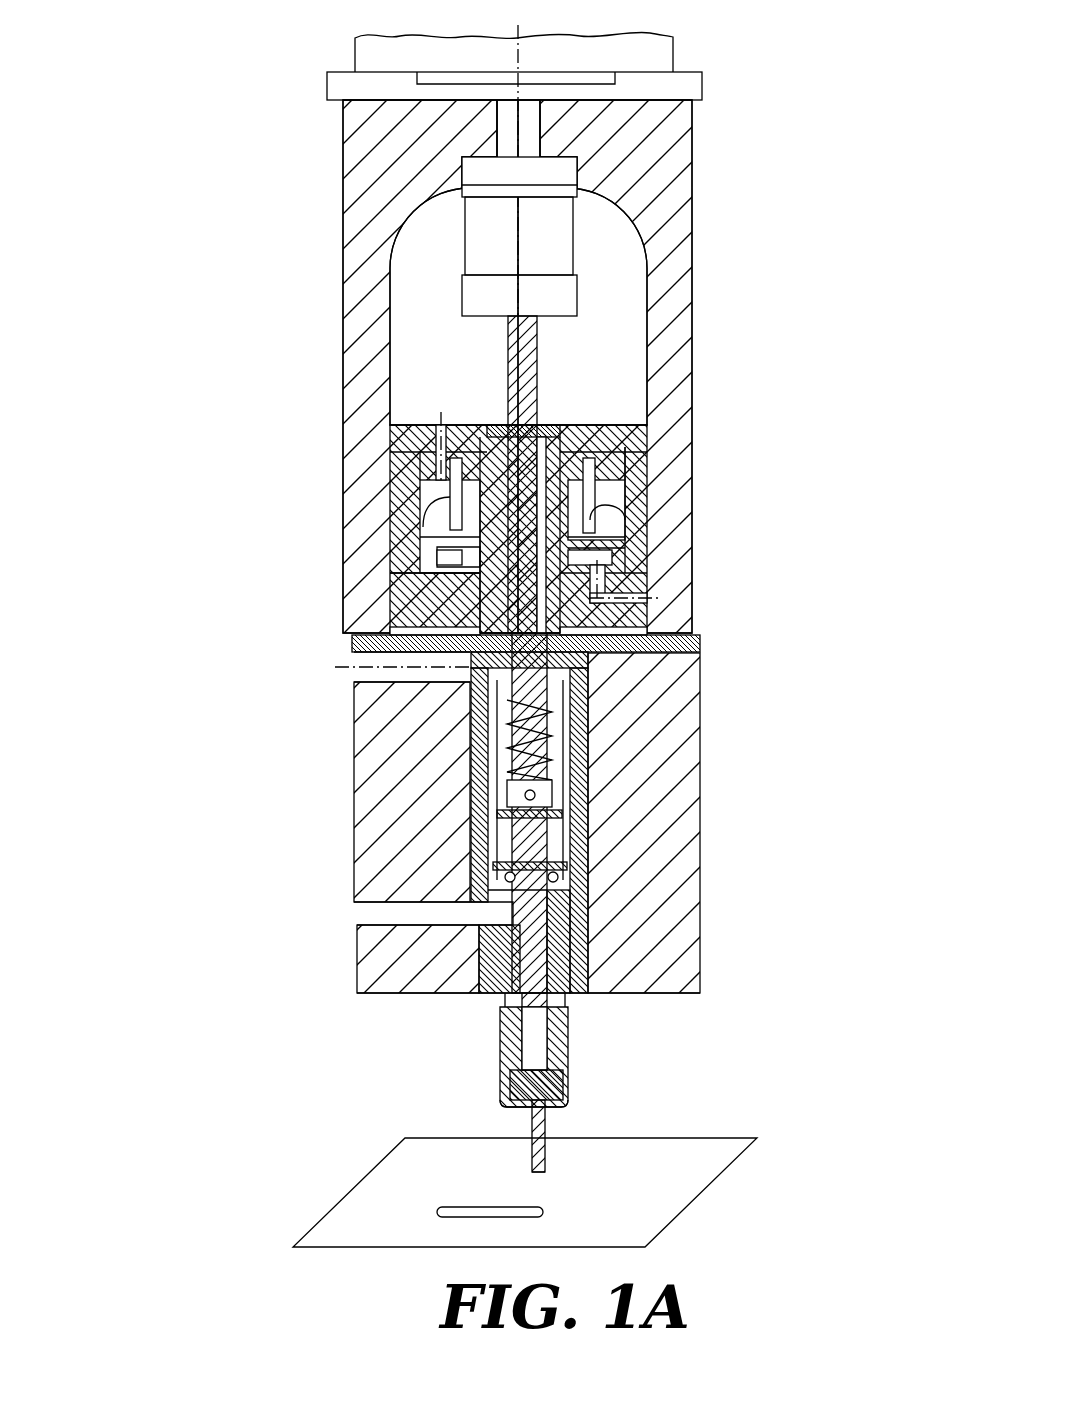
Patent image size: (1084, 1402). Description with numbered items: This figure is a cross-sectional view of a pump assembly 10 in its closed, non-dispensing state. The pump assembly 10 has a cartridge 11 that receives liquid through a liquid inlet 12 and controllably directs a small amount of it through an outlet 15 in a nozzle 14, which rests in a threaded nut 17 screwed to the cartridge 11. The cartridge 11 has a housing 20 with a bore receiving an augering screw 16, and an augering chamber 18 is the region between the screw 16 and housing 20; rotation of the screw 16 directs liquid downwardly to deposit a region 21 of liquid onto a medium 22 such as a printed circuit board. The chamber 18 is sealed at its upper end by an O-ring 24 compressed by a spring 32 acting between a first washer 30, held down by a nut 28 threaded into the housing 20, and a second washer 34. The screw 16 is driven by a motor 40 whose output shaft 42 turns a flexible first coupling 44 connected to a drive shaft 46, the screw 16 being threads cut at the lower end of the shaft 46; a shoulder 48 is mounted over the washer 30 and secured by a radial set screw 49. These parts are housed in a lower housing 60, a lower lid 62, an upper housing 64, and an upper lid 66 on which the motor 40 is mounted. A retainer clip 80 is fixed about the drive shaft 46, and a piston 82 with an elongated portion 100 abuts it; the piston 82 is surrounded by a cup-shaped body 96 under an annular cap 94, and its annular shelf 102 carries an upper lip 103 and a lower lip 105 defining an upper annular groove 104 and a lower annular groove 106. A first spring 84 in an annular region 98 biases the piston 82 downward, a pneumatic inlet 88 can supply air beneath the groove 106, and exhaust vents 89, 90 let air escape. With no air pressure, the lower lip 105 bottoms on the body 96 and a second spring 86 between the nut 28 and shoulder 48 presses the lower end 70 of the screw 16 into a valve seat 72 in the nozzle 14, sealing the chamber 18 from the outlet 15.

The pump assembly 10 is at (527, 603).
The cartridge 11 is at (528, 1098).
The liquid inlet 12 is at (356, 913).
The nozzle 14 is at (547, 1148).
The outlet 15 is at (545, 1172).
The augering screw 16 is at (563, 998).
The threaded nut 17 is at (570, 1052).
The augering chamber 18 is at (552, 922).
The housing 20 is at (590, 957).
The region of liquid 21 is at (455, 1205).
The medium 22 is at (525, 1192).
The O-ring 24 is at (558, 882).
The nut 28 is at (588, 745).
The first washer 30 is at (530, 838).
The spring 32 is at (562, 858).
The second washer 34 is at (567, 876).
The motor 40 is at (598, 48).
The output shaft 42 is at (530, 138).
The first coupling 44 is at (556, 248).
The drive shaft 46 is at (540, 375).
The shoulder 48 is at (552, 782).
The radial set screw 49 is at (536, 795).
The lower housing 60 is at (354, 735).
The lower lid 62 is at (352, 645).
The upper housing 64 is at (343, 432).
The upper lid 66 is at (327, 90).
The lower end 70 is at (568, 1078).
The valve seat 72 is at (500, 1095).
The retainer clip 80 is at (547, 425).
The piston 82 is at (620, 516).
The first spring 84 is at (432, 548).
The second spring 86 is at (590, 710).
The pneumatic inlet 88 is at (650, 597).
The exhaust vent 89 is at (356, 668).
The exhaust vent 90 is at (441, 412).
The annular cap 94 is at (650, 440).
The cup-shaped body 96 is at (650, 541).
The annular region 98 is at (602, 500).
The elongated portion 100 is at (650, 563).
The annular shelf 102 is at (400, 545).
The upper lip 103 is at (393, 522).
The upper annular groove 104 is at (393, 497).
The lower lip 105 is at (415, 570).
The lower annular groove 106 is at (393, 587).